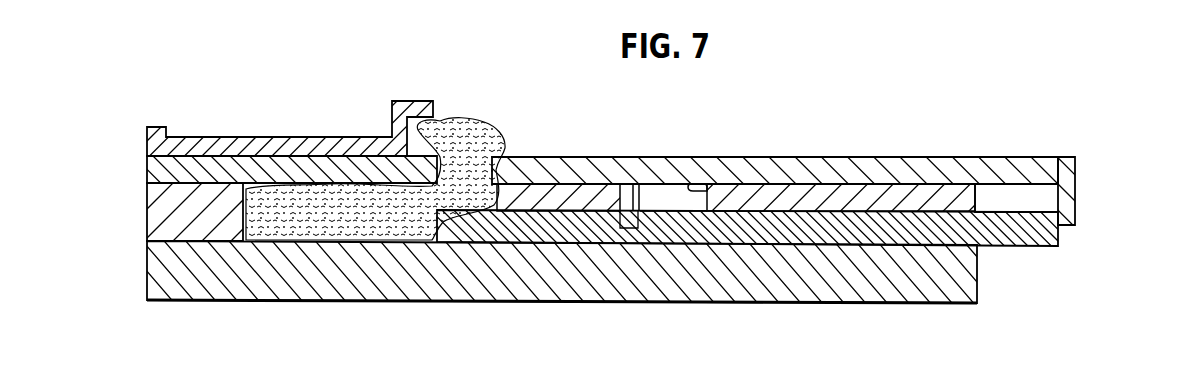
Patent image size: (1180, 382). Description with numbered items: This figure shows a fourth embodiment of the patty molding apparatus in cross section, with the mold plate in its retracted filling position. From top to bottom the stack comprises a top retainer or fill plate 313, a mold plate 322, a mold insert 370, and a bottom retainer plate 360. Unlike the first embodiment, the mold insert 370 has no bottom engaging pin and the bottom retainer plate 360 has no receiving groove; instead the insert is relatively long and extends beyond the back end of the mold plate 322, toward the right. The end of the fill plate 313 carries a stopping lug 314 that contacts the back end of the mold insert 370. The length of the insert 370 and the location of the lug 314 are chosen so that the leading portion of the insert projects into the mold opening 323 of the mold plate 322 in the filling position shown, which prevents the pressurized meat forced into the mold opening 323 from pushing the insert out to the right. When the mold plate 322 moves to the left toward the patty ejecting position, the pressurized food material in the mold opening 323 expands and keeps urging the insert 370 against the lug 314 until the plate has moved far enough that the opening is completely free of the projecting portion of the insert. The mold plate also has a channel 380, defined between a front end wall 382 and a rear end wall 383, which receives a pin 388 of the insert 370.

The fill plate 313 is at (758, 164).
The stopping lug 314 is at (1068, 203).
The mold plate 322 is at (840, 190).
The mold opening 323 is at (257, 210).
The bottom retainer plate 360 is at (862, 282).
The mold insert 370 is at (778, 233).
The channel 380 is at (662, 192).
The front end wall 382 is at (622, 198).
The rear end wall 383 is at (689, 185).
The pin 388 is at (633, 183).